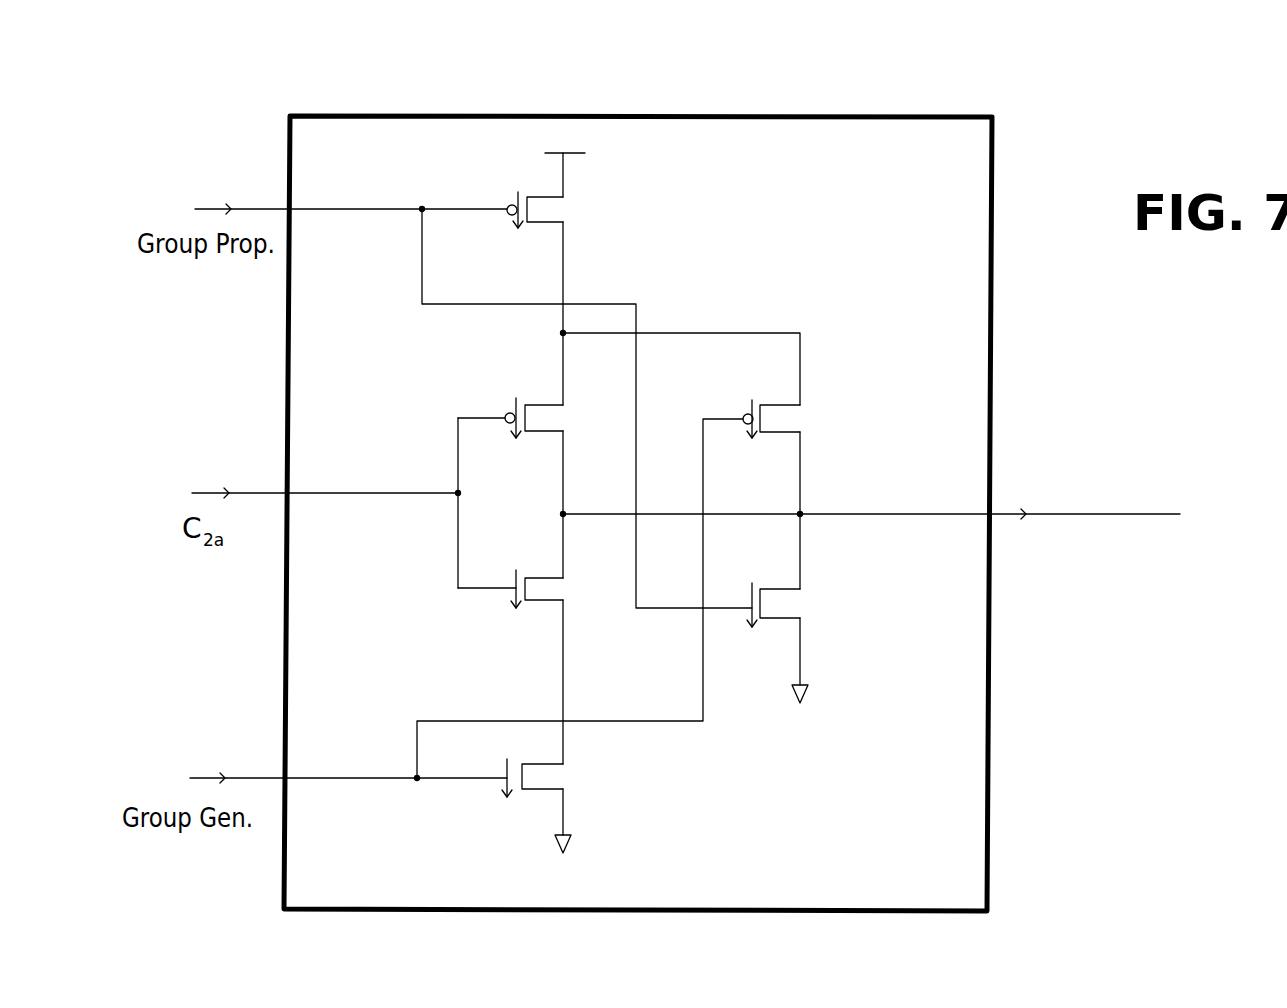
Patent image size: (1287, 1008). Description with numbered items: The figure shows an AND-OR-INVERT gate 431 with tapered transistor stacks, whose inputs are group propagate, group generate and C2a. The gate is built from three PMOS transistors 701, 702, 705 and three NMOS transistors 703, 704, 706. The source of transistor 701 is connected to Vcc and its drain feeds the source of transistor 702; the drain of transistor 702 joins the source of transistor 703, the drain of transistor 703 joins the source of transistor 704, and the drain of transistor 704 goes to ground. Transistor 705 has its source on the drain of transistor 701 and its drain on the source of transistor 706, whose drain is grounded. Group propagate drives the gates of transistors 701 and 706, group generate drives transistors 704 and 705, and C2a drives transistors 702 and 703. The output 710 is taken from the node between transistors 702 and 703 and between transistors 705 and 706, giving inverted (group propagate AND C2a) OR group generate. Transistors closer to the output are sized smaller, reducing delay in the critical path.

The AND-OR-INVERT gate 431 is at (677, 472).
The PMOS transistor 701 is at (565, 210).
The PMOS transistor 702 is at (559, 418).
The NMOS transistor 703 is at (562, 589).
The NMOS transistor 704 is at (560, 806).
The PMOS transistor 705 is at (801, 419).
The NMOS transistor 706 is at (803, 643).
The output 710 is at (871, 537).